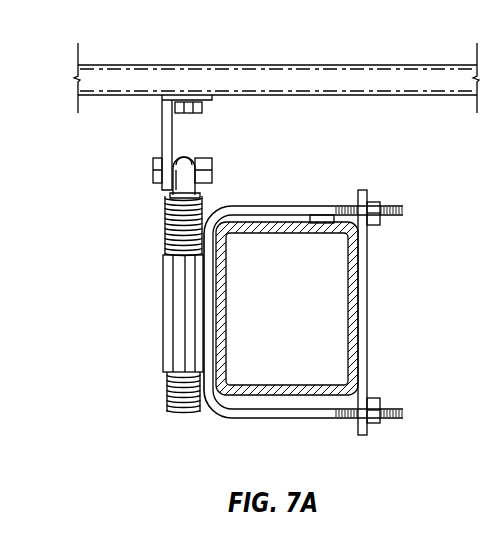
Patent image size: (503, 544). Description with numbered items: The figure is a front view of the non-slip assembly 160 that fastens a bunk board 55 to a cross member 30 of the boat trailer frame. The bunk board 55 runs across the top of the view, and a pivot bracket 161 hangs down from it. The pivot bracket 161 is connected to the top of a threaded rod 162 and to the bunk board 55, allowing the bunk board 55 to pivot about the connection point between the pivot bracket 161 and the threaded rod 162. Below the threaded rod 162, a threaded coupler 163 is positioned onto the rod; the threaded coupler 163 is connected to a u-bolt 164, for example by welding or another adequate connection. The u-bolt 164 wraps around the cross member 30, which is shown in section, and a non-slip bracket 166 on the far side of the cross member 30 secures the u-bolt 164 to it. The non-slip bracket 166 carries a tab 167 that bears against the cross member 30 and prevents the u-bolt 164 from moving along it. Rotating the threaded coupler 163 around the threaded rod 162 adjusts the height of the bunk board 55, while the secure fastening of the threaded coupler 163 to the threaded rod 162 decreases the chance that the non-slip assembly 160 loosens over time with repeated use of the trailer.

The bunk board 55 is at (392, 82).
The non-slip assembly 160 is at (115, 287).
The pivot bracket 161 is at (162, 108).
The threaded rod 162 is at (167, 212).
The threaded coupler 163 is at (165, 328).
The u-bolt 164 is at (277, 208).
The non-slip bracket 166 is at (363, 290).
The tab 167 is at (323, 222).
The cross member 30 is at (265, 388).